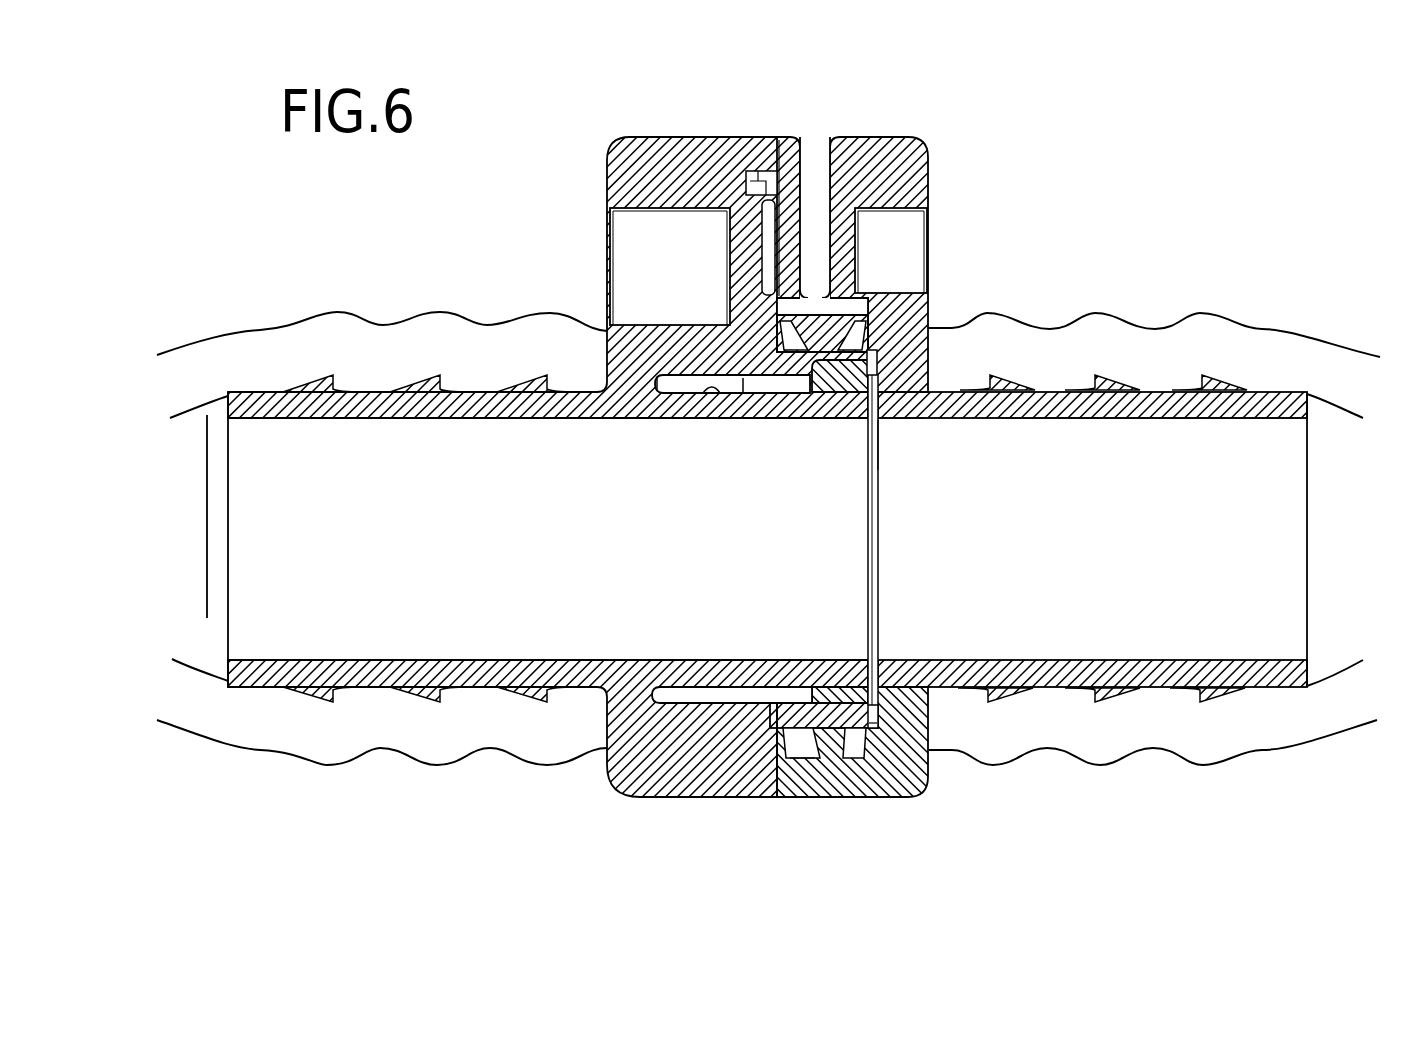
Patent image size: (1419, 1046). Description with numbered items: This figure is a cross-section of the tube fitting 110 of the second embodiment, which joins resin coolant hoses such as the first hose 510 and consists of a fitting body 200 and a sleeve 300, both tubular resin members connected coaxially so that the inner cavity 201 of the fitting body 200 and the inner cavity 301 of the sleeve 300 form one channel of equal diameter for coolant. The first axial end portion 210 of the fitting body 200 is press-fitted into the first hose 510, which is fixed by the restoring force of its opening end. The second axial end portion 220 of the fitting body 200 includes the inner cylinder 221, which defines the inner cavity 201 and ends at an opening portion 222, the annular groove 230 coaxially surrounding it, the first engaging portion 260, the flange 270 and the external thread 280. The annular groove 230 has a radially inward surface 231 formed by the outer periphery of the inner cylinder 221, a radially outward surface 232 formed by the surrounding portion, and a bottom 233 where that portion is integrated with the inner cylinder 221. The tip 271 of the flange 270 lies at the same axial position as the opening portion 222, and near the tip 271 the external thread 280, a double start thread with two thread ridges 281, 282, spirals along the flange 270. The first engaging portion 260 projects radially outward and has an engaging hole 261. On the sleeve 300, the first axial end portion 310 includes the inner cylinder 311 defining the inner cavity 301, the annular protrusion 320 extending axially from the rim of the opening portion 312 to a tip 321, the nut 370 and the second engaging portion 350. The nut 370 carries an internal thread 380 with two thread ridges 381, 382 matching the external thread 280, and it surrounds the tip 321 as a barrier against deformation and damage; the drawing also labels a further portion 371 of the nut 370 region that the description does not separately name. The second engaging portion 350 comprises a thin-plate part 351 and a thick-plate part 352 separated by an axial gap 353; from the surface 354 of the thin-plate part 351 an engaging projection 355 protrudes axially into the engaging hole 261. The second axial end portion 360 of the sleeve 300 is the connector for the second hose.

The tube fitting 110 is at (1148, 125).
The fitting body 200 is at (598, 355).
The inner cavity 201 is at (416, 536).
The first axial end portion 210 is at (597, 654).
The second axial end portion 220 is at (863, 651).
The inner cylinder 221 is at (743, 395).
The opening portion 222 is at (853, 418).
The annular groove 230 is at (743, 383).
The radially inward surface 231 is at (710, 382).
The radially outward surface 232 is at (667, 393).
The bottom 233 is at (655, 385).
The first engaging portion 260 is at (648, 137).
The engaging hole 261 is at (762, 212).
The flange 270 is at (633, 797).
The tip 271 is at (870, 724).
The external thread 280 is at (786, 366).
The thread ridge 281 is at (777, 760).
The thread ridge 282 is at (858, 745).
The sleeve 300 is at (936, 356).
The inner cavity 301 is at (1211, 546).
The first axial end portion 310 is at (928, 639).
The inner cylinder 311 is at (900, 420).
The opening portion 312 is at (883, 418).
The annular protrusion 320 is at (843, 385).
The tip 321 is at (767, 753).
The second engaging portion 350 is at (965, 34).
The thin-plate part 351 is at (792, 137).
The thick-plate part 352 is at (883, 137).
The axial gap 353 is at (817, 140).
The surface 354 is at (747, 178).
The engaging projection 355 is at (772, 137).
The second axial end portion 360 is at (1305, 638).
The nut 370 is at (913, 797).
The seal groove 371 is at (823, 757).
The internal thread 380 is at (838, 317).
The thread ridge 381 is at (867, 333).
The thread ridge 382 is at (807, 755).
The first hose 510 is at (290, 323).